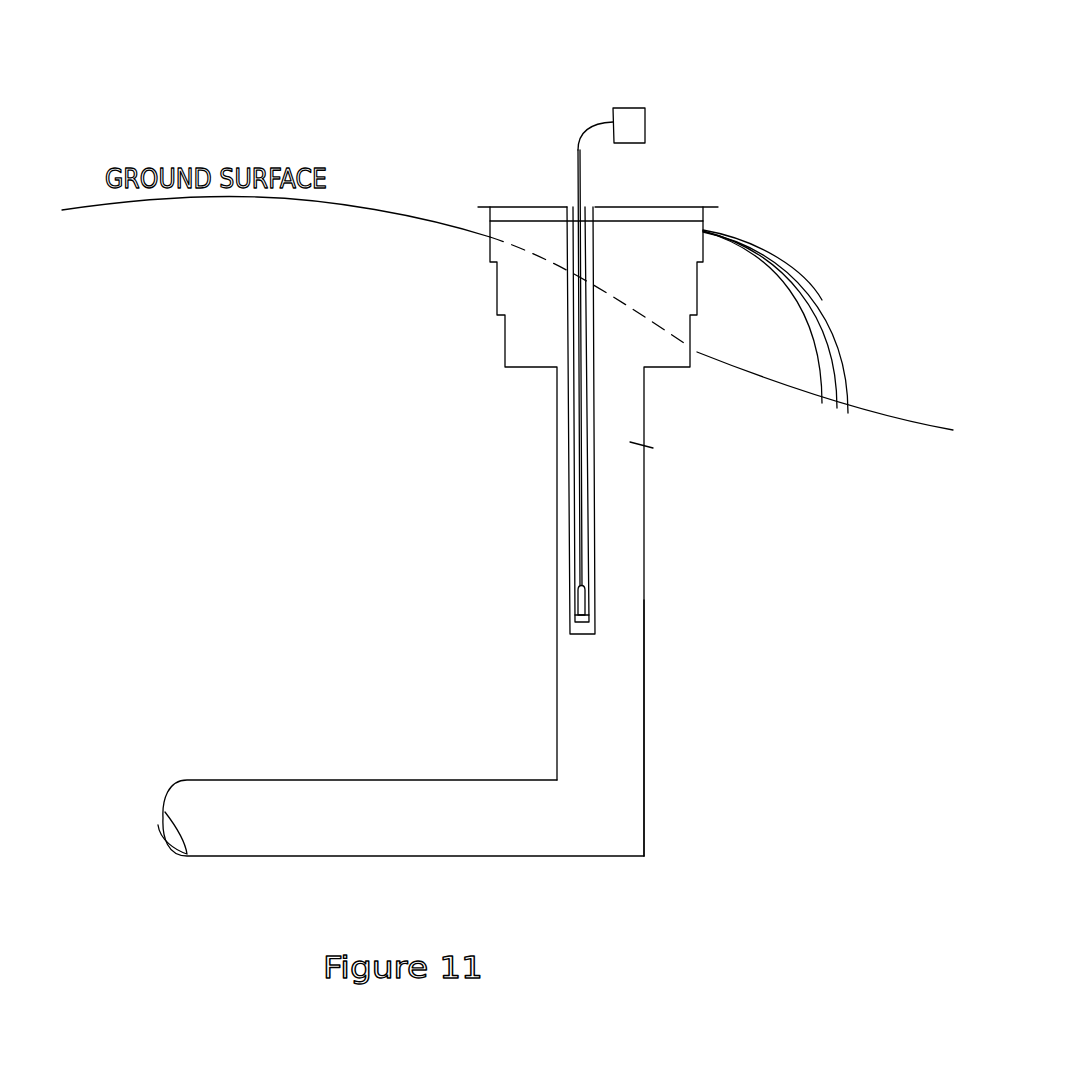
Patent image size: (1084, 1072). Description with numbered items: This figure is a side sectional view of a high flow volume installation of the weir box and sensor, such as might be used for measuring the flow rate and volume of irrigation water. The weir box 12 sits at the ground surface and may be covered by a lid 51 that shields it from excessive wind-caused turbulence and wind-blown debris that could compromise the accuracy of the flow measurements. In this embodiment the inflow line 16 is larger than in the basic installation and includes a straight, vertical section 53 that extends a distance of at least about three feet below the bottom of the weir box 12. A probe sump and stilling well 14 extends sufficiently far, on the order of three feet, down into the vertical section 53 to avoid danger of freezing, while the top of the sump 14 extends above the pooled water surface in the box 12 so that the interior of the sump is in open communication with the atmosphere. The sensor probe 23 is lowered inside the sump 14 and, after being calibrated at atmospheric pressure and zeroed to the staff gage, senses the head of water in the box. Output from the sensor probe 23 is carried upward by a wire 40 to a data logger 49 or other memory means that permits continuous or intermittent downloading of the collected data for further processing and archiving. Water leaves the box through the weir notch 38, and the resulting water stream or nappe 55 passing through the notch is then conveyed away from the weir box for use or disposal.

The weir box 12 is at (497, 290).
The probe sump and stilling well 14 is at (595, 518).
The inflow line 16 is at (530, 370).
The sensor probe 23 is at (582, 602).
The weir notch 38 is at (703, 228).
The wire 40 is at (578, 168).
The data logger 49 is at (633, 123).
The lid 51 is at (535, 178).
The vertical section 53 is at (628, 695).
The nappe 55 is at (815, 310).